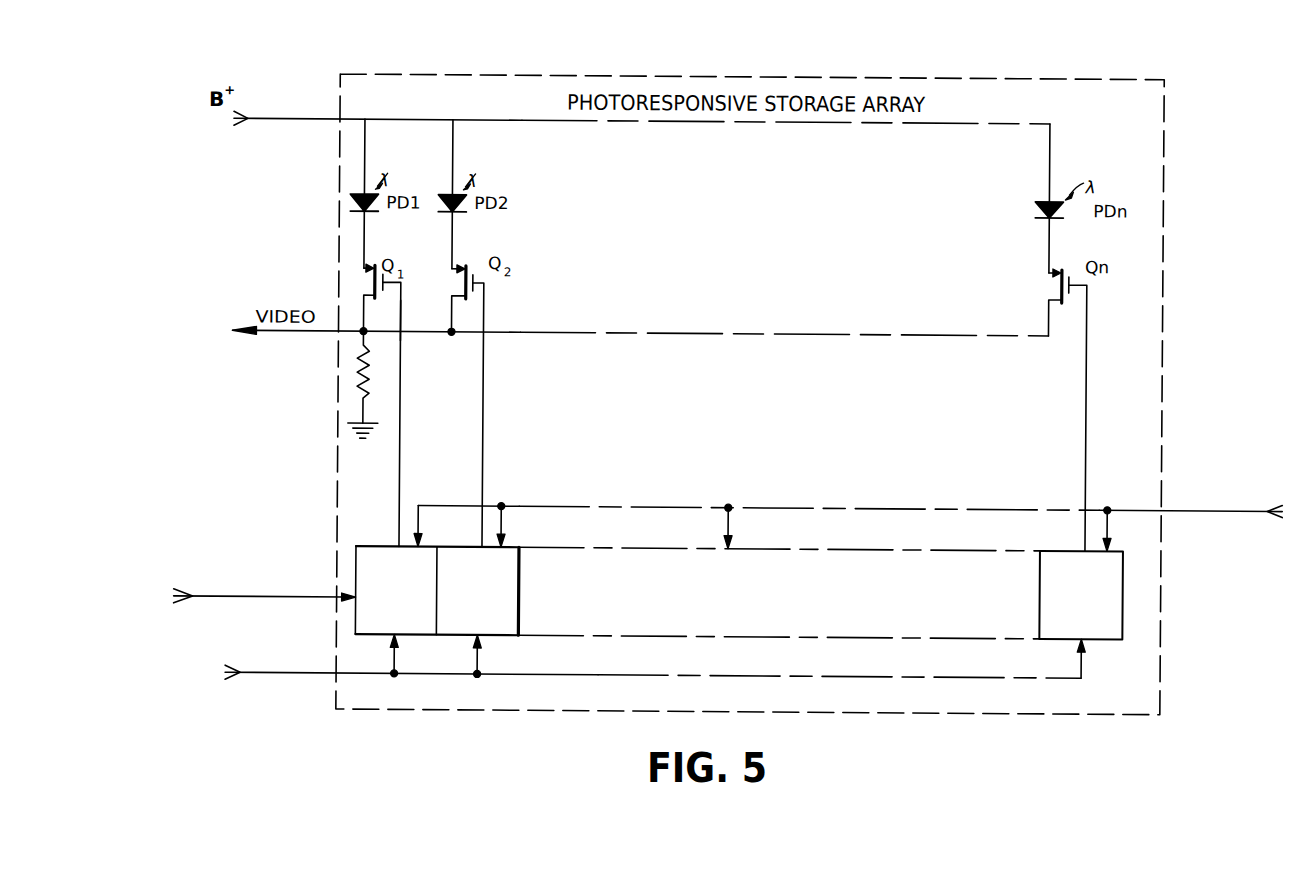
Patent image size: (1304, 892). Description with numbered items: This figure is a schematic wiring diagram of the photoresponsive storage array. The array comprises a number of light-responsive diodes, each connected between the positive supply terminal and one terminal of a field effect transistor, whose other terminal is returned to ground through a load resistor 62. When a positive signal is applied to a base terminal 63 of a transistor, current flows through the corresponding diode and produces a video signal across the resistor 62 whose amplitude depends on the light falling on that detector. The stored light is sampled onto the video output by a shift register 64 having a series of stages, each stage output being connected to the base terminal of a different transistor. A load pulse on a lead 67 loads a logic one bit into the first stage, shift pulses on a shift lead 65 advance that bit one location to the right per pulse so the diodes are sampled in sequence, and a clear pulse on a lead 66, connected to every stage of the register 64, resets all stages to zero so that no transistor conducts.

The load resistor 62 is at (353, 357).
The base terminal 63 is at (401, 321).
The shift register 64 is at (784, 600).
The shift lead 65 is at (290, 677).
The clear lead 66 is at (834, 506).
The load lead 67 is at (252, 599).